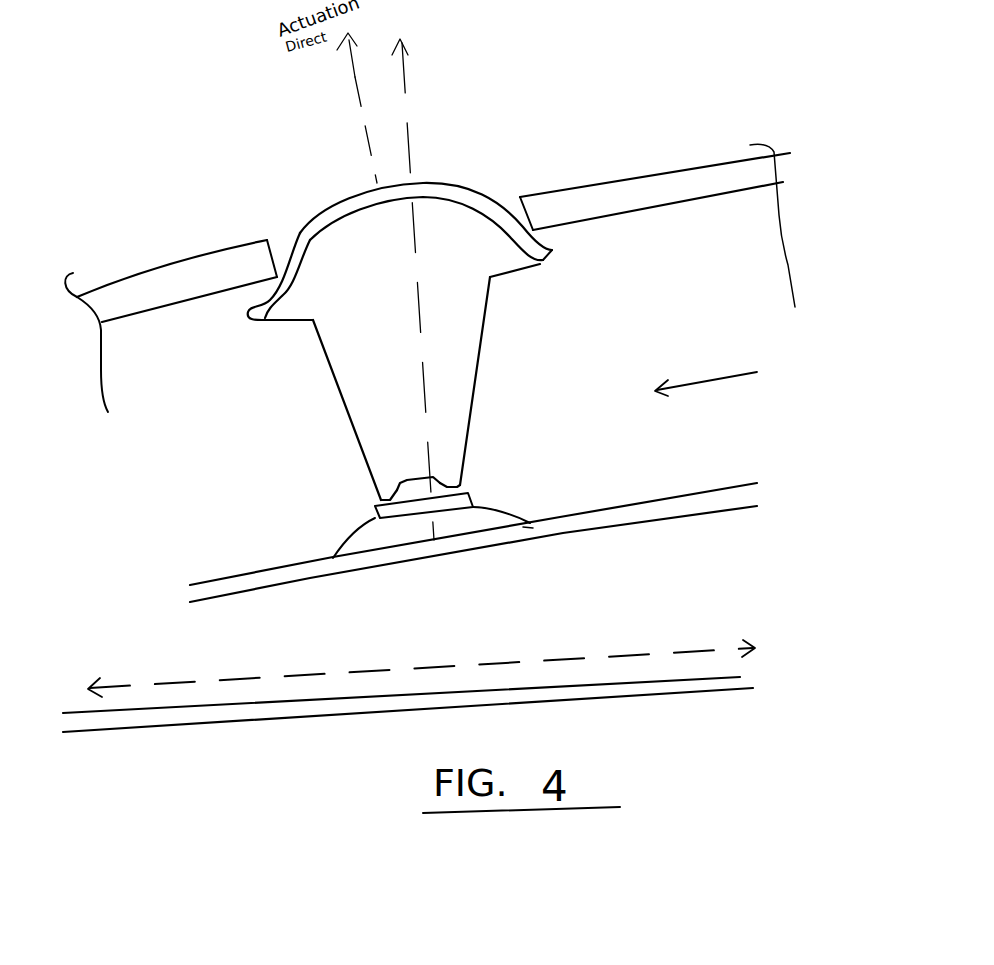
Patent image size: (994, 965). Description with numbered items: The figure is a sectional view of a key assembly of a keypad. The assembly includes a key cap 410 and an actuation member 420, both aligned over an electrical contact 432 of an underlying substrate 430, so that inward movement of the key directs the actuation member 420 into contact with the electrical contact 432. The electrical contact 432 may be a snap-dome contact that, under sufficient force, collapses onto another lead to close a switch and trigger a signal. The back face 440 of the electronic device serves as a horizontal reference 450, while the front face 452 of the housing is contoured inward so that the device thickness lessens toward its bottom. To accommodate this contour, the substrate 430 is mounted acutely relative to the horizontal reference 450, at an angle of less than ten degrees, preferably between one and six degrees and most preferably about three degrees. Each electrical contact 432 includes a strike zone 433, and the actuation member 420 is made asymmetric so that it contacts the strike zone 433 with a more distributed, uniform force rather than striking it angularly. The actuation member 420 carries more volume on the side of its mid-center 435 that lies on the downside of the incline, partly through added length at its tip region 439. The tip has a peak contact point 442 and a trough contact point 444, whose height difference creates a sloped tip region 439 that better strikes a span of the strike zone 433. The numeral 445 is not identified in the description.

The key cap 410 is at (440, 228).
The actuation member 420 is at (409, 388).
The substrate 430 is at (610, 508).
The electrical contact 432 is at (462, 495).
The strike zone 433 is at (382, 520).
The mid-center 435 is at (434, 270).
The tip region 439 is at (420, 470).
The back face 440 is at (170, 732).
The peak contact point 442 is at (380, 497).
The trough contact point 444 is at (487, 448).
The direction of travel 445 is at (715, 371).
The horizontal reference 450 is at (740, 630).
The front face 452 is at (162, 280).